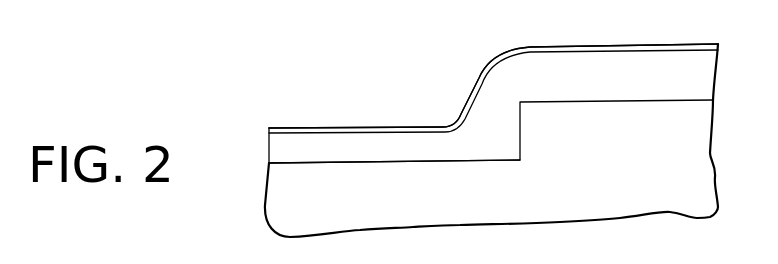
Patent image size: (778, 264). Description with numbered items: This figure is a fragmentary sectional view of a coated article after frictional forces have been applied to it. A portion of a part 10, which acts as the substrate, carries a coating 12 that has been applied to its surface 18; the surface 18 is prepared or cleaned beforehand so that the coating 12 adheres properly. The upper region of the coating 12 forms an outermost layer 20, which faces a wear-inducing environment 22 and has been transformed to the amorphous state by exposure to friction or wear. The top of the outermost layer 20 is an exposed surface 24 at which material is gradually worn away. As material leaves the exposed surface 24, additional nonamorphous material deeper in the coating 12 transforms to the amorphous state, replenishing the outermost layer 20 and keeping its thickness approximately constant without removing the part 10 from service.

The part 10 is at (265, 200).
The coating 12 is at (270, 152).
The surface 18 is at (423, 161).
The outermost layer 20 is at (293, 128).
The wear-inducing environment 22 is at (383, 58).
The exposed surface 24 is at (342, 130).